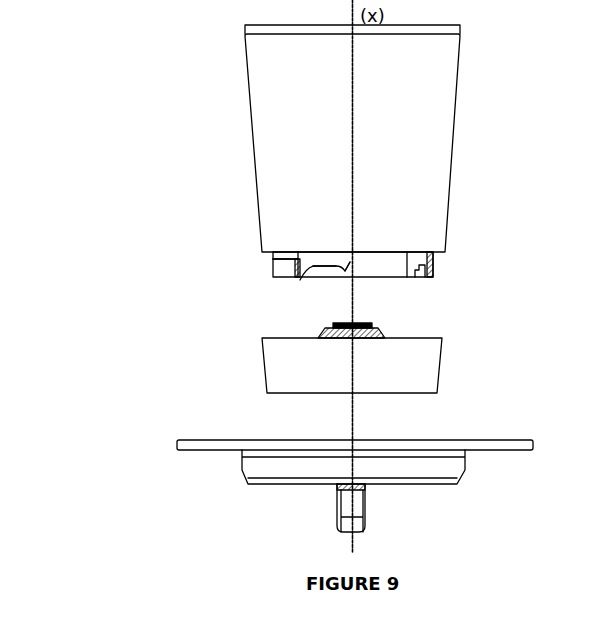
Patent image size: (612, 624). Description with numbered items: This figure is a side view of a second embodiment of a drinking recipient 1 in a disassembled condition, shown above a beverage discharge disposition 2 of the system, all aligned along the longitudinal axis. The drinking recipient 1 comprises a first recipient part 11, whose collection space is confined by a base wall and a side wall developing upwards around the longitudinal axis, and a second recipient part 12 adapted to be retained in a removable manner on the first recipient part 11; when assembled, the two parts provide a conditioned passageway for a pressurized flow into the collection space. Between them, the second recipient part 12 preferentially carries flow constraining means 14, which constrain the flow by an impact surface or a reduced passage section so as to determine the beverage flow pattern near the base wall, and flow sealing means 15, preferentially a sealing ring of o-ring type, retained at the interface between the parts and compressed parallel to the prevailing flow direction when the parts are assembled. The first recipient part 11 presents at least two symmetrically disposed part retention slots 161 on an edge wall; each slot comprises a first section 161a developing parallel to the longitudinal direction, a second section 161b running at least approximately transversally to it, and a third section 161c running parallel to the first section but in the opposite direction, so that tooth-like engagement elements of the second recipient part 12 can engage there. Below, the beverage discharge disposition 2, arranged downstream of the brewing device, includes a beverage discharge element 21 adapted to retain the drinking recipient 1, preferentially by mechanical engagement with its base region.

The drinking recipient 1 is at (90, 27).
The first recipient part 11 is at (318, 151).
The second recipient part 12 is at (326, 365).
The flow constraining means 14 is at (336, 325).
The flow sealing means 15 is at (378, 332).
The part retention slots 161 is at (302, 279).
The first section 161a is at (273, 259).
The second section 161b is at (320, 252).
The third section 161c is at (355, 252).
The beverage discharge disposition 2 is at (355, 473).
The beverage discharge element 21 is at (373, 508).